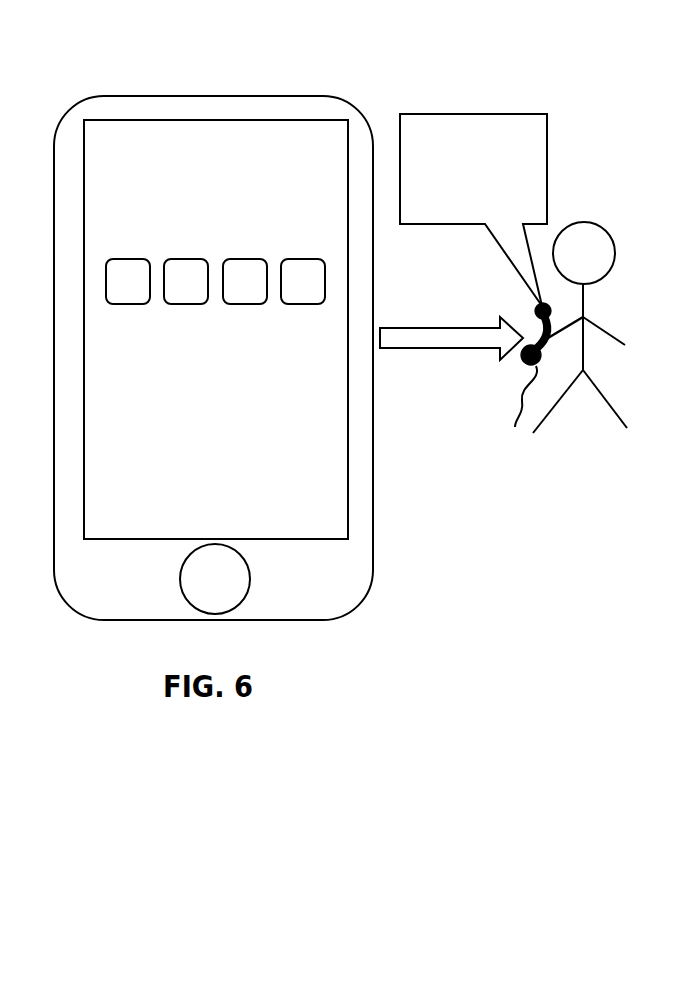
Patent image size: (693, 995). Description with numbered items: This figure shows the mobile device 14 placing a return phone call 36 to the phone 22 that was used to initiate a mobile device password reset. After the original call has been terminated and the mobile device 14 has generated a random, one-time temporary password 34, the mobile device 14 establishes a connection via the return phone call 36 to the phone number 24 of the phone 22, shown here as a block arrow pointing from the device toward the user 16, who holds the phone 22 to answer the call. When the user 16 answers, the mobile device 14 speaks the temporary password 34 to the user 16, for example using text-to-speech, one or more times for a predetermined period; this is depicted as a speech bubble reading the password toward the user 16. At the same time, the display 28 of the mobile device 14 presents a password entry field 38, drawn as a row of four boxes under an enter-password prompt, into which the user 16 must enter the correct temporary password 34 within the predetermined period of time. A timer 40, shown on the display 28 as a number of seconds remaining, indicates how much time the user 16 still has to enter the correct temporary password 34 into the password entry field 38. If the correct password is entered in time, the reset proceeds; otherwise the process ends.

The mobile device 14 is at (296, 68).
The display 28 is at (73, 152).
The password entry field 38 is at (241, 225).
The timer 40 is at (124, 434).
The temporary password 34 is at (452, 224).
The return phone call 36 is at (447, 335).
The phone number 24 is at (424, 407).
The user 16 is at (629, 202).
The phone 22 is at (528, 380).